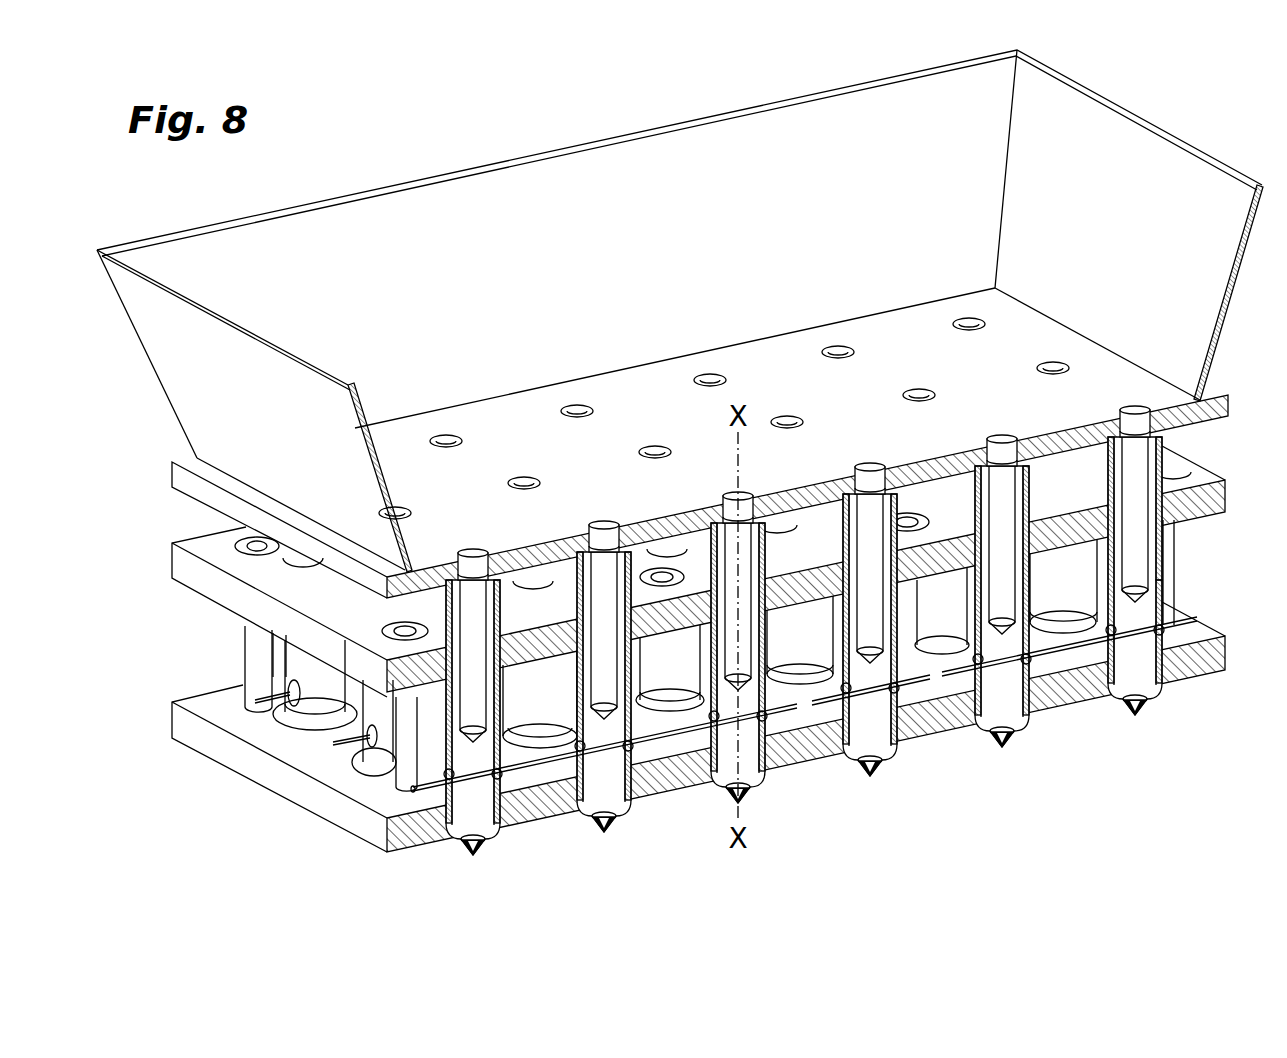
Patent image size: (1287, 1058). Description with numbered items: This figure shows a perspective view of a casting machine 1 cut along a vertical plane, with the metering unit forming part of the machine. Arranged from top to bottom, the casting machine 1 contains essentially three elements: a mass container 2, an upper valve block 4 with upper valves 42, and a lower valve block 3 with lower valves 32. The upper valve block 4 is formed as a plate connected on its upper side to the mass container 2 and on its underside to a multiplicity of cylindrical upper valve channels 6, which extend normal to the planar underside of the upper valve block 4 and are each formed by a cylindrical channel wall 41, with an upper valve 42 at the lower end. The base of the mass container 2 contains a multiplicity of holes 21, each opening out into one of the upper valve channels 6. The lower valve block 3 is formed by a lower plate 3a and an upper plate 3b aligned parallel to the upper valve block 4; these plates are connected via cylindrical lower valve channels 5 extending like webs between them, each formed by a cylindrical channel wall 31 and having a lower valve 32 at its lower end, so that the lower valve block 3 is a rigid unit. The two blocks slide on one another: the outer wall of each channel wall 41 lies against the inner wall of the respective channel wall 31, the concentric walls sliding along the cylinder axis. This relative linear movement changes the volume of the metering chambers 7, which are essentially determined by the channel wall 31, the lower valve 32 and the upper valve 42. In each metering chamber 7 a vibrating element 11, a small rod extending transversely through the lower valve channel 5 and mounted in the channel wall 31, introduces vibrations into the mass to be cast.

The casting machine 1 is at (482, 151).
The mass container 2 is at (160, 353).
The lower valve block 3 is at (125, 530).
The lower plate 3a is at (195, 730).
The upper plate 3b is at (195, 570).
The upper valve block 4 is at (163, 465).
The lower valve channel 5 is at (484, 808).
The upper valve channel 6 is at (844, 641).
The metering chamber 7 is at (990, 699).
The vibrating element 11 is at (843, 728).
The hole 21 is at (652, 458).
The channel wall 31 is at (292, 662).
The lower valve 32 is at (485, 858).
The channel wall 41 is at (1163, 557).
The upper valve 42 is at (1163, 597).